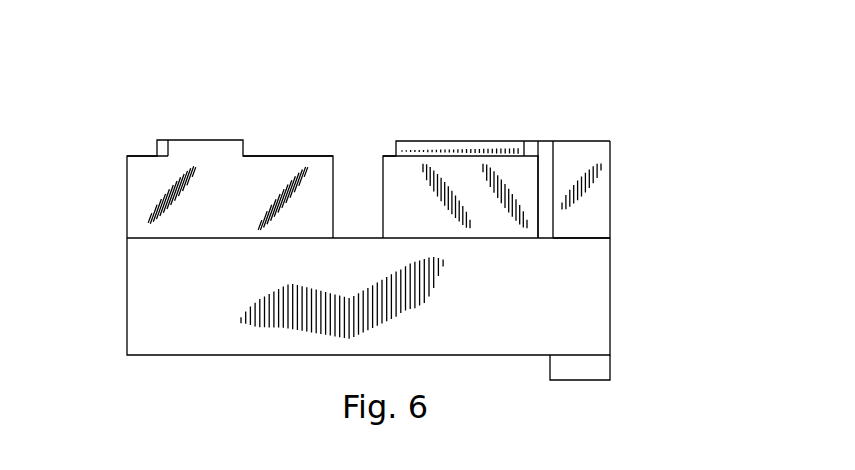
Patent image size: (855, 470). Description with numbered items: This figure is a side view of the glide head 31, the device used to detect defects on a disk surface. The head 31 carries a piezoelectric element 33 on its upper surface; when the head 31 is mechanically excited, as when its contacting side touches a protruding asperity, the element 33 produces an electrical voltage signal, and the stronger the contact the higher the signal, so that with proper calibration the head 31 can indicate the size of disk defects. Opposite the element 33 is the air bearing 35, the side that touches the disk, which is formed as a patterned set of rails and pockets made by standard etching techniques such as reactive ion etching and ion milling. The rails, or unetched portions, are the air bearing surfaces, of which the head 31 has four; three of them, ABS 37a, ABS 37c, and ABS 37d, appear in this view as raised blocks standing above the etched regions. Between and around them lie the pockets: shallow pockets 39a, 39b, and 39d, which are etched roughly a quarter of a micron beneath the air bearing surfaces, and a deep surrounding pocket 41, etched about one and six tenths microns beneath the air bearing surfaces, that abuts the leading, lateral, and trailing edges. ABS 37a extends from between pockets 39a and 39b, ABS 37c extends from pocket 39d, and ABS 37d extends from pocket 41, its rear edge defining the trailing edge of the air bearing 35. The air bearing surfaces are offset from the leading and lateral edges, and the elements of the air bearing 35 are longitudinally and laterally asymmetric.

The glide head 31 is at (650, 273).
The piezoelectric element 33 is at (600, 368).
The air bearing 35 is at (401, 118).
The air bearing surface 37a is at (213, 139).
The air bearing surface 37c is at (497, 141).
The air bearing surface 37d is at (588, 140).
The shallow pocket 39a is at (142, 155).
The shallow pocket 39b is at (307, 155).
The shallow pocket 39d is at (383, 156).
The deep surrounding pocket 41 is at (353, 236).